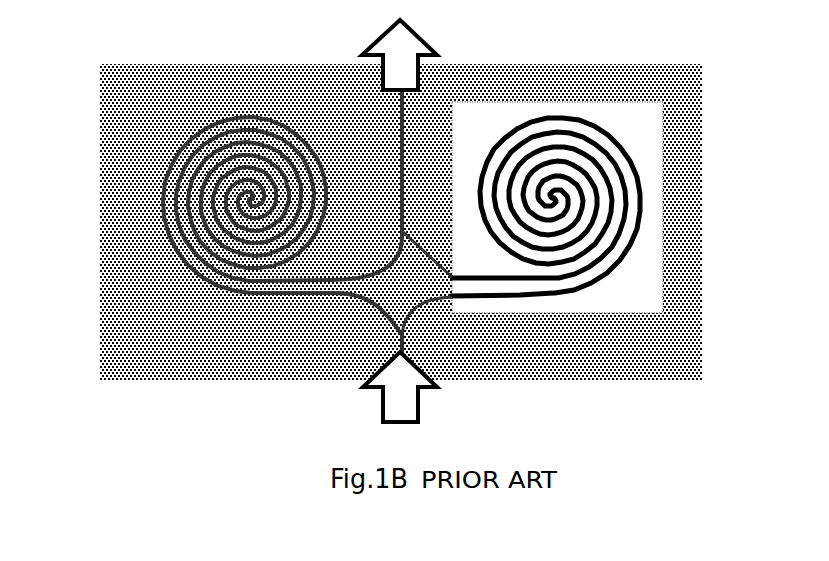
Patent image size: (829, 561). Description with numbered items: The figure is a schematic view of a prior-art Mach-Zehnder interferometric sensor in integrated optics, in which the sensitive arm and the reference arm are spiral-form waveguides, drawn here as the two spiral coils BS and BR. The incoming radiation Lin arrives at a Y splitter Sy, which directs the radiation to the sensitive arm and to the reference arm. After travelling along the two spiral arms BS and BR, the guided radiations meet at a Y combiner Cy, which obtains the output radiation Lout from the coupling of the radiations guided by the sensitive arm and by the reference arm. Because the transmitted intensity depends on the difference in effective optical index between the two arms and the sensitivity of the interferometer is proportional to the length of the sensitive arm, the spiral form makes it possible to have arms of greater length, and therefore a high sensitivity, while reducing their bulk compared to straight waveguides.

The spiral waveguide sensing arm (beam splitter spiral, reference) BS is at (157, 178).
The spiral waveguide reference/sensing coil in sensing region BR is at (640, 168).
The Y combiner Cy is at (420, 243).
The Y splitter Sy is at (427, 328).
The output radiation Lout is at (368, 55).
The input radiation Lin is at (386, 387).